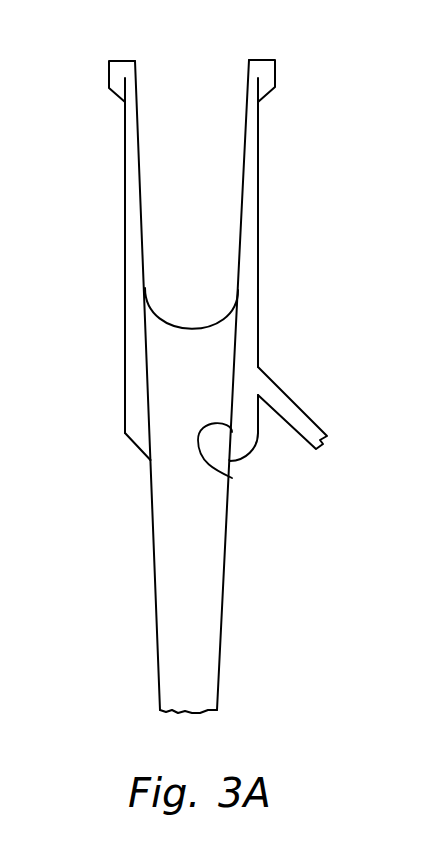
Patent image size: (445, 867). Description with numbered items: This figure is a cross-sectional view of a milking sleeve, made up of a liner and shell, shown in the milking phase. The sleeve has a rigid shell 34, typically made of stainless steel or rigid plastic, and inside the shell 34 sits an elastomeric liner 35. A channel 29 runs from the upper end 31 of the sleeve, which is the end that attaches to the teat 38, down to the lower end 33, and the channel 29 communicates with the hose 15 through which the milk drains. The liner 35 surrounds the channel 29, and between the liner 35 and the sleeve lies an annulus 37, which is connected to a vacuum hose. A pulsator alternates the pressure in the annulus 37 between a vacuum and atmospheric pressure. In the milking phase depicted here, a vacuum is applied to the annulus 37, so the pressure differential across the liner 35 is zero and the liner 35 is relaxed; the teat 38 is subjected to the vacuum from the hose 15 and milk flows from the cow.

The hose 15 is at (224, 612).
The channel 29 is at (232, 478).
The upper end 31 is at (264, 60).
The lower end 33 is at (150, 460).
The shell 34 is at (125, 322).
The liner 35 is at (237, 330).
The annulus 37 is at (247, 208).
The teat 38 is at (193, 152).